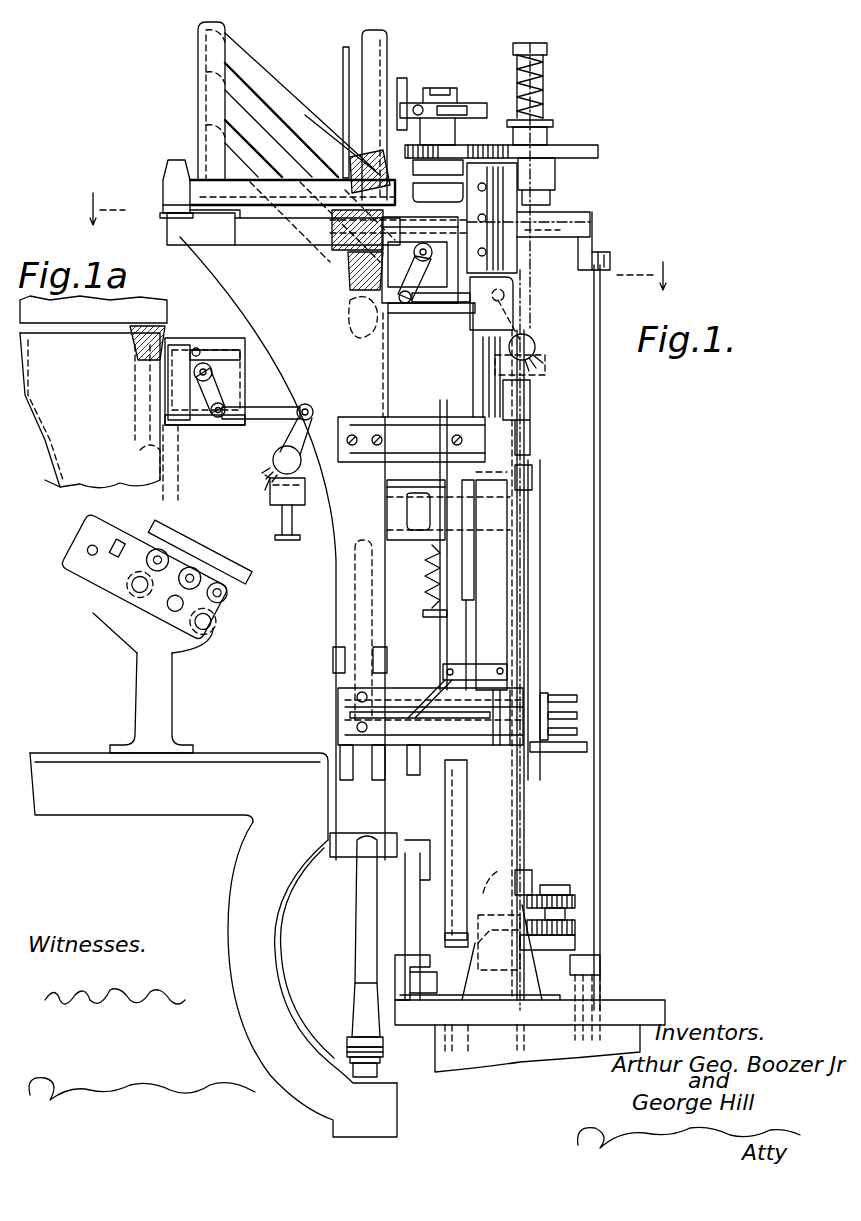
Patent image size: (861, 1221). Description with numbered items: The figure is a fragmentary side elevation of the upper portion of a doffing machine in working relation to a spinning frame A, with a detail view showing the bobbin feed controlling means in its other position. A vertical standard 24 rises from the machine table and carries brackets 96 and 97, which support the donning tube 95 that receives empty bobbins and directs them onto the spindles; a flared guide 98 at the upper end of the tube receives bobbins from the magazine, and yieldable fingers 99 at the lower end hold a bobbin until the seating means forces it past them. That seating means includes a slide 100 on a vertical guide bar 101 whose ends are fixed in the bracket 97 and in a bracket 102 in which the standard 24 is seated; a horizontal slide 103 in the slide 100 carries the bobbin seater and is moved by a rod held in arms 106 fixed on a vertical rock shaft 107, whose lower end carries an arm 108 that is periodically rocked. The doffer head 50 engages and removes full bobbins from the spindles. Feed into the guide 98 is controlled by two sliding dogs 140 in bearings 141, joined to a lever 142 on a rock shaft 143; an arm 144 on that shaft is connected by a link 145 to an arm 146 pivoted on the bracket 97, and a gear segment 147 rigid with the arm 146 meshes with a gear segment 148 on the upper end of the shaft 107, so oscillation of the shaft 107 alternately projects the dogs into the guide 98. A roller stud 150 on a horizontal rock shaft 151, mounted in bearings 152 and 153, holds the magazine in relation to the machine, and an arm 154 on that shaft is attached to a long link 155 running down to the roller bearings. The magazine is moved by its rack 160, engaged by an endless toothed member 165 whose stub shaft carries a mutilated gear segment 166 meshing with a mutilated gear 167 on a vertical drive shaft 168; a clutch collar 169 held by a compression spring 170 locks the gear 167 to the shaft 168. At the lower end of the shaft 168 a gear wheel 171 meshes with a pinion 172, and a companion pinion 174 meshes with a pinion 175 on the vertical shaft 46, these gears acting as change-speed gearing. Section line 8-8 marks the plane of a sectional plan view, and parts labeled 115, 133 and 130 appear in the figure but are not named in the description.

In FIG. 1, the rail clamp bar 115 is at (198, 78).
In FIG. 1A, the rail clamp bar 115 is at (157, 308).
In FIG. 1, the supporting bars 133 is at (350, 140).
In FIG. 1, the rack 160 is at (402, 95).
In FIG. 1, the endless toothed member 165 is at (450, 99).
In FIG. 1, the compression spring 170 is at (547, 83).
In FIG. 1, the clutch collar 169 is at (543, 133).
In FIG. 1, the mutilated gear segment 166 is at (458, 153).
In FIG. 1, the mutilated gear 167 is at (600, 152).
In FIG. 1, the bracket 130 is at (438, 181).
In FIG. 1, the roller stud 150 is at (175, 192).
In FIG. 1, the horizontal rock shaft 151 is at (280, 226).
In FIG. 1, the bearing 152 is at (217, 228).
In FIG. 1, the bearing 153 is at (553, 213).
In FIG. 1, the arm 154 is at (590, 247).
In FIG. 1, the long link 155 is at (603, 556).
In FIG. 1, the section line 8 is at (375, 241).
In FIG. 1, the sliding dogs 140 is at (383, 307).
In FIG. 1A, the sliding dogs 140 is at (187, 338).
In FIG. 1, the bearings 141 is at (443, 282).
In FIG. 1A, the bearings 141 is at (234, 352).
In FIG. 1, the lever 142 is at (418, 268).
In FIG. 1, the rock shaft 143 is at (442, 303).
In FIG. 1, the arm 144 is at (375, 287).
In FIG. 1A, the arm 144 is at (212, 393).
In FIG. 1, the flared guide portion 98 is at (347, 277).
In FIG. 1A, the flared guide portion 98 is at (90, 410).
In FIG. 1, the link 145 is at (475, 337).
In FIG. 1A, the link 145 is at (266, 417).
In FIG. 1, the arm 146 is at (523, 327).
In FIG. 1A, the arm 146 is at (307, 437).
In FIG. 1, the gear segment 147 is at (536, 352).
In FIG. 1A, the gear segment 147 is at (266, 467).
In FIG. 1, the gear segment 148 is at (537, 368).
In FIG. 1A, the gear segment 148 is at (268, 478).
In FIG. 1, the bracket 97 is at (410, 435).
In FIG. 1, the vertical rock shaft 107 is at (526, 439).
In FIG. 1A, the vertical rock shaft 107 is at (292, 522).
In FIG. 1, the arms 106 is at (533, 478).
In FIG. 1, the horizontal slide 103 is at (528, 527).
In FIG. 1, the vertical drive shaft 168 is at (536, 560).
In FIG. 1, the standard 24 is at (490, 620).
In FIG. 1, the donning tube 95 is at (347, 570).
In FIG. 1, the slide 100 is at (417, 545).
In FIG. 1, the vertical guide bar 101 is at (458, 630).
In FIG. 1, the bracket 96 is at (397, 690).
In FIG. 1, the doffer head 50 is at (567, 725).
In FIG. 1, the fingers 99 is at (335, 765).
In FIG. 1, the spinning frame A is at (243, 797).
In FIG. 1, the gear wheel 171 is at (498, 877).
In FIG. 1, the pinion 172 is at (578, 902).
In FIG. 1, the pinion 174 is at (578, 930).
In FIG. 1, the pinion 175 is at (518, 948).
In FIG. 1, the bracket 102 is at (445, 995).
In FIG. 1, the arm 108 is at (572, 958).
In FIG. 1, the vertical shaft 46 is at (523, 1027).